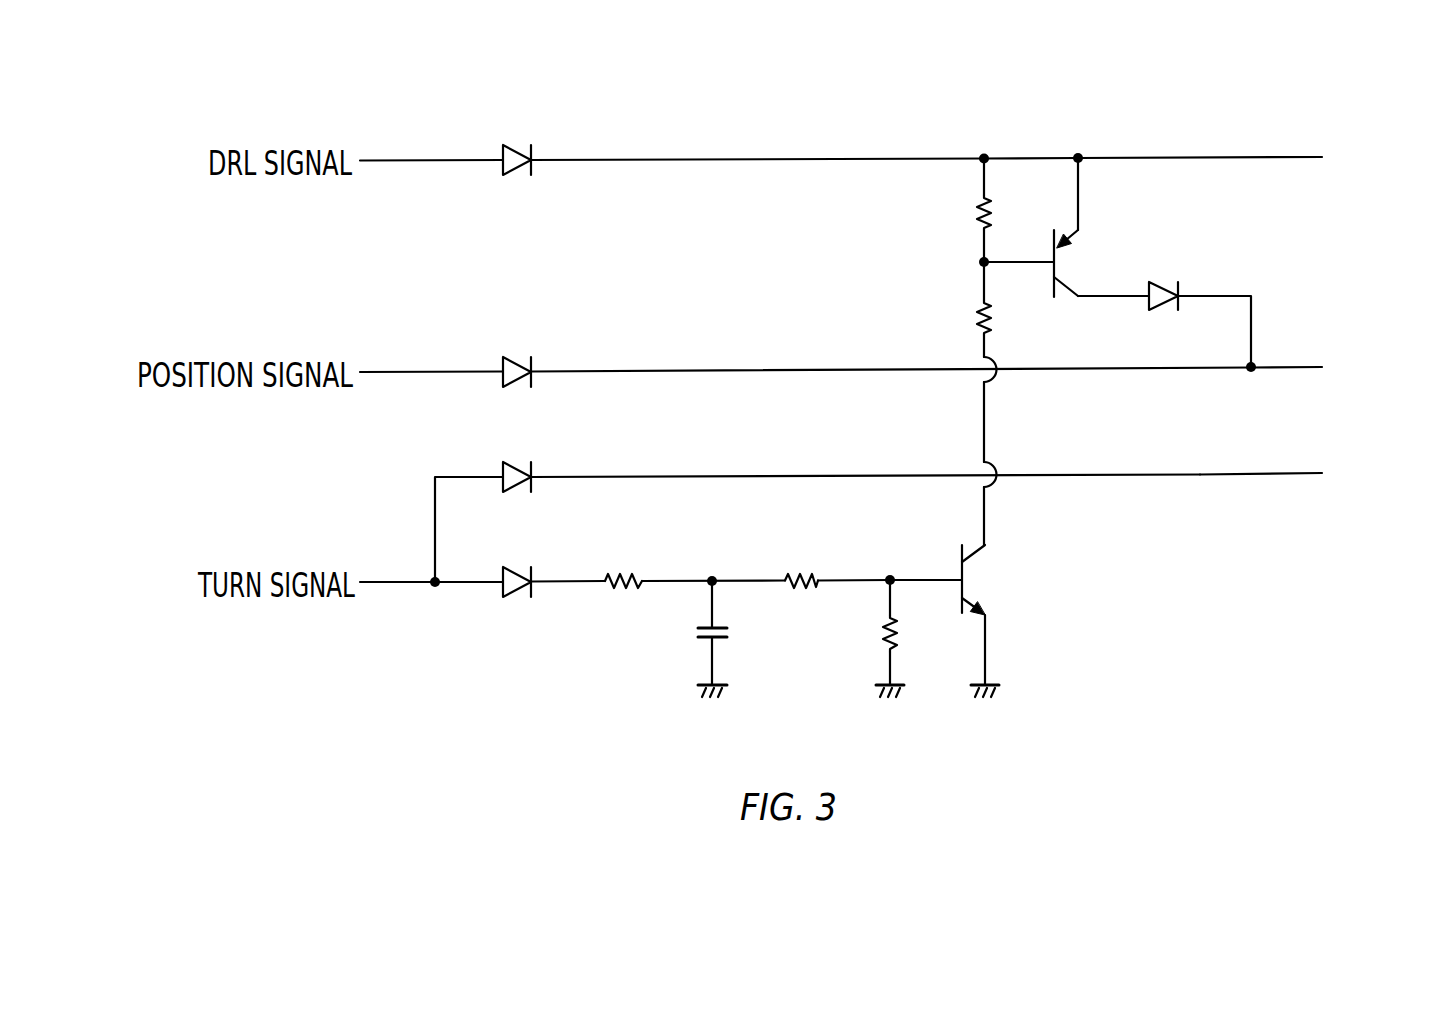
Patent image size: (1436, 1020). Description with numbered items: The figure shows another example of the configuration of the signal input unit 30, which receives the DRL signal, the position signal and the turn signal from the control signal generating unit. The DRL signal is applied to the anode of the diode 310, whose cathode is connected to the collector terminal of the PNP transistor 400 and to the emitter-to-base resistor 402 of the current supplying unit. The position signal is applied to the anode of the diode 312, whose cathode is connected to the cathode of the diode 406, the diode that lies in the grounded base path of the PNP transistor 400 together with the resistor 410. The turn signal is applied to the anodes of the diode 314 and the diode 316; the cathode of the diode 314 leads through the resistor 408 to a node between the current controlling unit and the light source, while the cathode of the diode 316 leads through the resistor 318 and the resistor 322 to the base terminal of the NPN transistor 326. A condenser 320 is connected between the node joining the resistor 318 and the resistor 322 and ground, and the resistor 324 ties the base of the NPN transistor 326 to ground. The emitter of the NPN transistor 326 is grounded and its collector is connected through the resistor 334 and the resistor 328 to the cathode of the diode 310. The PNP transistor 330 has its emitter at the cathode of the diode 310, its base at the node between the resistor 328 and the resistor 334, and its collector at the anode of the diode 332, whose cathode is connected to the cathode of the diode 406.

The signal input unit 30 is at (1429, 99).
The diode 310 is at (516, 179).
The diode 312 is at (520, 355).
The diode 314 is at (520, 459).
The diode 316 is at (521, 565).
The resistor 318 is at (624, 570).
The condenser 320 is at (692, 634).
The resistor 322 is at (803, 570).
The resistor 324 is at (880, 632).
The NPN transistor 326 is at (988, 580).
The resistor 328 is at (975, 212).
The PNP transistor 330 is at (1082, 262).
The diode 332 is at (1163, 312).
The resistor 334 is at (975, 312).
The PNP transistor 400 is at (1252, 158).
The resistor 402 is at (1252, 158).
The diode 406 is at (1340, 368).
The resistor 408 is at (1286, 473).
The resistor 410 is at (1340, 368).